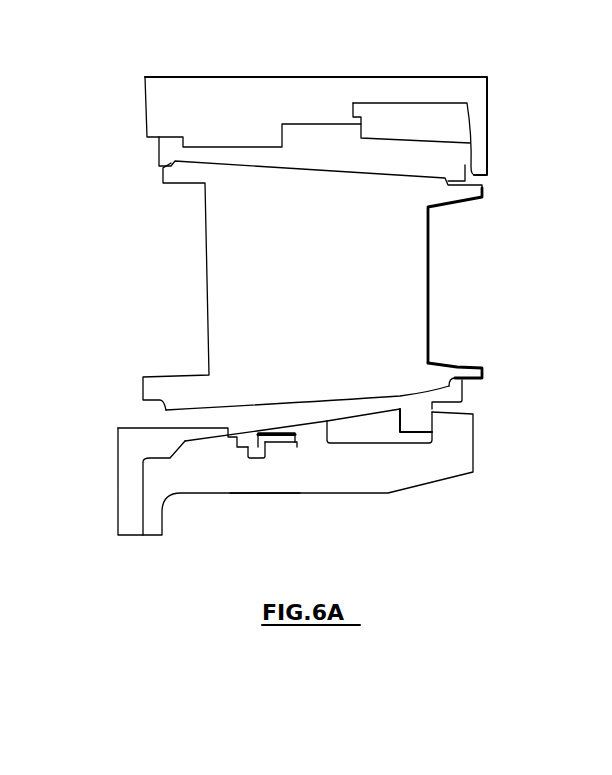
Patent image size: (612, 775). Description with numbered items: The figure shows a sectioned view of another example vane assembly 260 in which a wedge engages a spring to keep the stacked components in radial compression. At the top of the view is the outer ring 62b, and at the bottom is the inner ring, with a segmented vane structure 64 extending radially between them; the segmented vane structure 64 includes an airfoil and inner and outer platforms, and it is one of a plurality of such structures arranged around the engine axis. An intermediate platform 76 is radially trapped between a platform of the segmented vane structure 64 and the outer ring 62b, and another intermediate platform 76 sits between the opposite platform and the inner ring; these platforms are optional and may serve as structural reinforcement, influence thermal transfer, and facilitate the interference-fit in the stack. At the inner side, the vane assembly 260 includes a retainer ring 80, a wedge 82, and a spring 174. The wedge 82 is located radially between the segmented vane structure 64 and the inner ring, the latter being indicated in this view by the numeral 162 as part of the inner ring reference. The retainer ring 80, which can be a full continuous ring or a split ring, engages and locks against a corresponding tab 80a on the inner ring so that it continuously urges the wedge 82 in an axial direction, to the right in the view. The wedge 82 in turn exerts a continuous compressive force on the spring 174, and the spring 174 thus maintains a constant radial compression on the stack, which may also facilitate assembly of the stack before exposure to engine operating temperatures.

The vane assembly 260 is at (132, 299).
The outer ring 62b is at (243, 80).
The intermediate platform 76 is at (440, 143).
The segmented vane structure 64 is at (432, 293).
The spring 174 is at (272, 432).
The retainer ring 80 is at (232, 443).
The tab 80a is at (236, 458).
The wedge 82 is at (296, 444).
The surface 162 is at (250, 494).